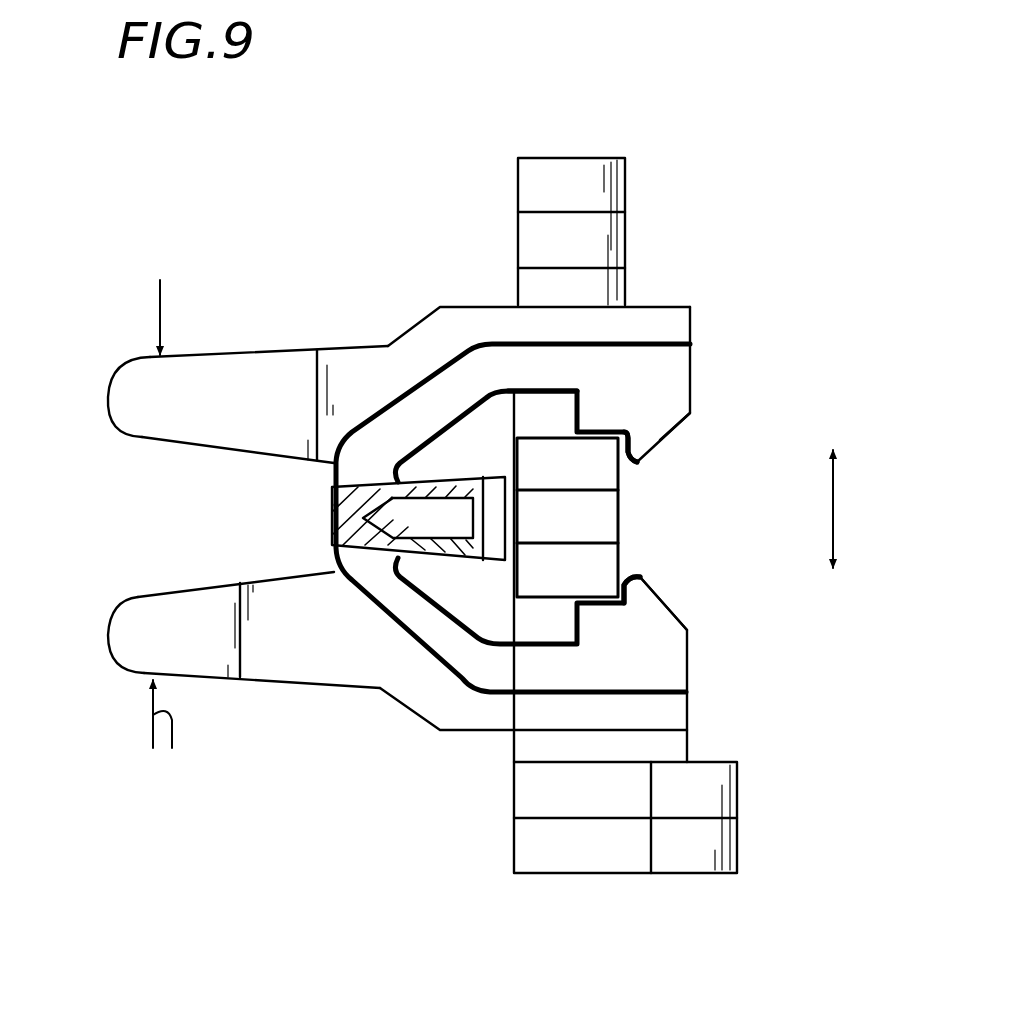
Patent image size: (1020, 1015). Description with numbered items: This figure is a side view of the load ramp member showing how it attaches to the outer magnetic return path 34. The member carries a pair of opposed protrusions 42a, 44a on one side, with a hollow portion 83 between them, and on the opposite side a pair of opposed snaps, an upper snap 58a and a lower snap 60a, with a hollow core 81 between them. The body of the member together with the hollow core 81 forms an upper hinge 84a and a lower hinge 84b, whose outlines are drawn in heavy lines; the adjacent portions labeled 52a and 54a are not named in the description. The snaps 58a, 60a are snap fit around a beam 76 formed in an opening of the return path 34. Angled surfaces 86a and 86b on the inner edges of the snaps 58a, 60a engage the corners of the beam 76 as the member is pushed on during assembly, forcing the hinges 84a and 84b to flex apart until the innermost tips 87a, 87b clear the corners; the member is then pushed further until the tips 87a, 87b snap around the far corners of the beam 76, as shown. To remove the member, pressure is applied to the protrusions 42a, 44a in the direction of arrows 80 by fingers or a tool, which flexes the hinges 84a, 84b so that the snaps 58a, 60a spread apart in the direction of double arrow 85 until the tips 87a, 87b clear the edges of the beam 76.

The outer magnetic return path 34 is at (626, 181).
The protrusion 42a is at (130, 382).
The protrusion 44a is at (126, 636).
The first leg of body 52a is at (388, 397).
The second leg of body 54a is at (400, 640).
The upper snap 58a is at (670, 377).
The lower snap 60a is at (680, 658).
The beam 76 is at (586, 580).
The arrows 80 is at (162, 345).
The hollow core 81 is at (515, 427).
The hollow portion 83 is at (372, 518).
The upper hinge 84a is at (457, 378).
The lower hinge 84b is at (468, 657).
The double arrow 85 is at (833, 485).
The angled surface 86a is at (672, 437).
The angled surface 86b is at (667, 597).
The tip 87a is at (637, 462).
The tip 87b is at (638, 573).